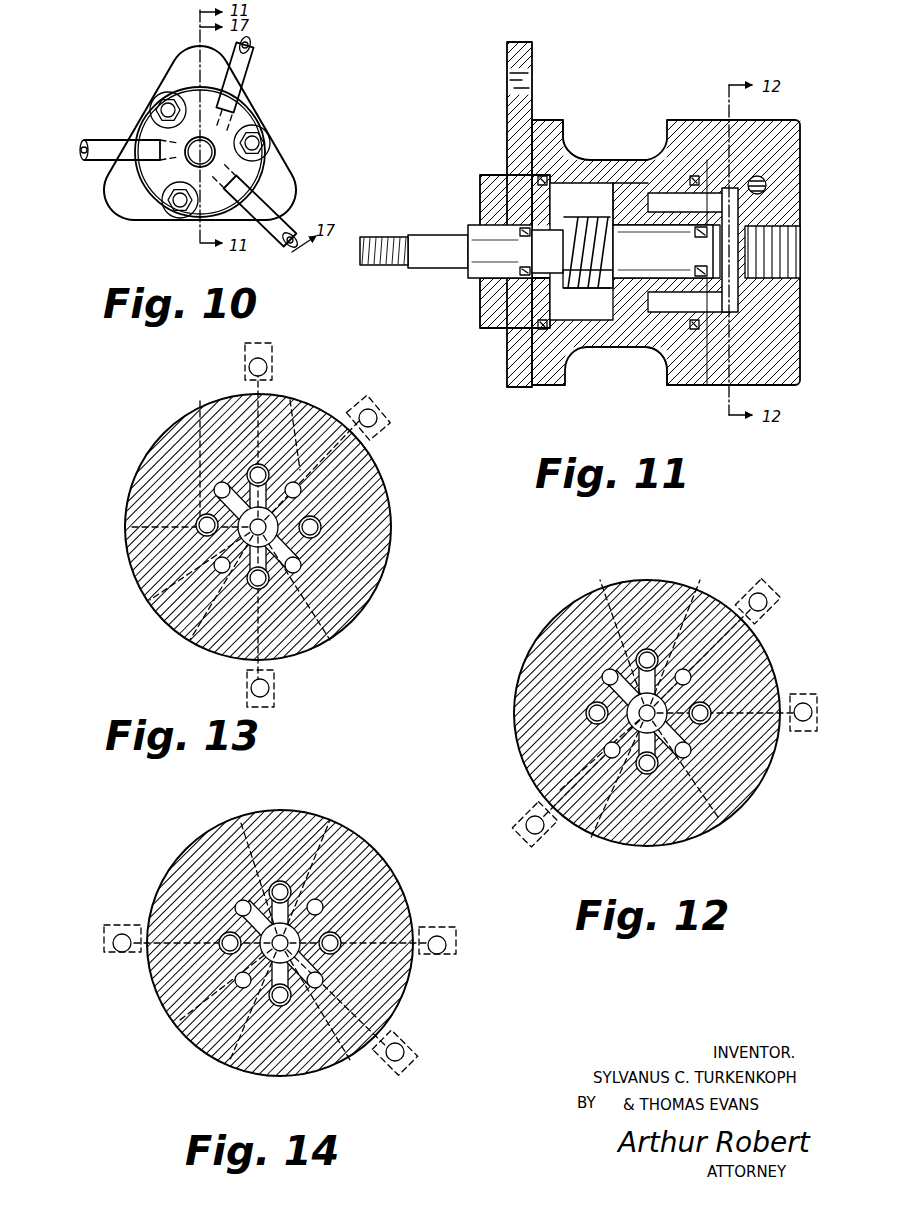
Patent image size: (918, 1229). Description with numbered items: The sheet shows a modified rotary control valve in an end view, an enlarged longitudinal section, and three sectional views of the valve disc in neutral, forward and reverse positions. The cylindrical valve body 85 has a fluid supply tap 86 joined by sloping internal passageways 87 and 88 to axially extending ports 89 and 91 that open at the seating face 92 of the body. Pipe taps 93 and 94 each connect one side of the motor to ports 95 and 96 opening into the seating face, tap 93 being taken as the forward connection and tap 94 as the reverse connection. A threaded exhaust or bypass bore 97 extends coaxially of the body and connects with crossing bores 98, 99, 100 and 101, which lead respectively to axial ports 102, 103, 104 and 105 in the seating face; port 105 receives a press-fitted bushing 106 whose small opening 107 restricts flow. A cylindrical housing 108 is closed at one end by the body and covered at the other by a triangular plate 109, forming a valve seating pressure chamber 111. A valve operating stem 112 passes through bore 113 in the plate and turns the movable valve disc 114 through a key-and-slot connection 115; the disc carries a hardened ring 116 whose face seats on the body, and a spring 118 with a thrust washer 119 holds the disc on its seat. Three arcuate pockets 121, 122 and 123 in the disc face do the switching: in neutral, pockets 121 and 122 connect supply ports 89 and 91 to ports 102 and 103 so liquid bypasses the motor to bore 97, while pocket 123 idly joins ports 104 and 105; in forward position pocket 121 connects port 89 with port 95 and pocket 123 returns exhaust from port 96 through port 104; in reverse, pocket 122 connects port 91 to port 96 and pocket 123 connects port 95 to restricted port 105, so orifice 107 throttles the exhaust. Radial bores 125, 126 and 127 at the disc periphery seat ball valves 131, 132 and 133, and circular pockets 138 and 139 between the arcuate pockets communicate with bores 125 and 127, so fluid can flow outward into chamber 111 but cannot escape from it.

In FIG. 10, the cylindrical valve body 85 is at (248, 100).
In FIG. 11, the cylindrical valve body 85 is at (722, 120).
In FIG. 13, the cylindrical valve body 85 is at (345, 615).
In FIG. 12, the cylindrical valve body 85 is at (735, 820).
In FIG. 14, the cylindrical valve body 85 is at (330, 1065).
In FIG. 10, the fluid supply tap 86 is at (216, 102).
In FIG. 13, the fluid supply tap 86 is at (203, 466).
In FIG. 12, the fluid supply tap 86 is at (590, 650).
In FIG. 14, the fluid supply tap 86 is at (210, 855).
In FIG. 13, the sloping internal passageway 87 is at (215, 478).
In FIG. 12, the sloping internal passageway 87 is at (600, 660).
In FIG. 14, the sloping internal passageway 87 is at (220, 880).
In FIG. 11, the sloping internal passageway 88 is at (766, 186).
In FIG. 13, the sloping internal passageway 88 is at (290, 400).
In FIG. 12, the sloping internal passageway 88 is at (640, 590).
In FIG. 14, the sloping internal passageway 88 is at (290, 820).
In FIG. 13, the axially extending port 89 is at (196, 525).
In FIG. 12, the axially extending port 89 is at (586, 713).
In FIG. 14, the axially extending port 89 is at (222, 936).
In FIG. 13, the axially extending port 91 is at (302, 489).
In FIG. 12, the axially extending port 91 is at (692, 676).
In FIG. 14, the axially extending port 91 is at (324, 906).
In FIG. 11, the seating face 92 is at (632, 192).
In FIG. 10, the pipe tap 93 is at (262, 176).
In FIG. 13, the pipe tap 93 is at (190, 622).
In FIG. 12, the pipe tap 93 is at (580, 800).
In FIG. 14, the pipe tap 93 is at (200, 1000).
In FIG. 10, the pipe tap 94 is at (140, 180).
In FIG. 13, the pipe tap 94 is at (330, 545).
In FIG. 12, the pipe tap 94 is at (725, 735).
In FIG. 14, the pipe tap 94 is at (342, 948).
In FIG. 13, the port 95 is at (215, 650).
In FIG. 12, the port 95 is at (603, 750).
In FIG. 14, the port 95 is at (234, 980).
In FIG. 13, the port 96 is at (322, 527).
In FIG. 12, the port 96 is at (710, 722).
In FIG. 14, the port 96 is at (325, 975).
In FIG. 10, the threaded exhaust or bypass bore 97 is at (190, 162).
In FIG. 11, the threaded exhaust or bypass bore 97 is at (800, 250).
In FIG. 13, the threaded exhaust or bypass bore 97 is at (232, 652).
In FIG. 12, the threaded exhaust or bypass bore 97 is at (605, 835).
In FIG. 14, the threaded exhaust or bypass bore 97 is at (380, 1010).
In FIG. 13, the crossing bore 98 is at (205, 505).
In FIG. 11, the crossing bore 99 is at (738, 250).
In FIG. 13, the crossing bore 99 is at (318, 520).
In FIG. 12, the crossing bore 99 is at (710, 705).
In FIG. 13, the crossing bore 100 is at (300, 562).
In FIG. 11, the crossing bore 101 is at (740, 302).
In FIG. 13, the crossing bore 101 is at (272, 566).
In FIG. 14, the crossing bore 101 is at (295, 1060).
In FIG. 13, the axial port 102 is at (214, 490).
In FIG. 12, the axial port 102 is at (602, 677).
In FIG. 14, the axial port 102 is at (235, 906).
In FIG. 11, the axial port 103 is at (662, 195).
In FIG. 13, the axial port 103 is at (268, 470).
In FIG. 12, the axial port 103 is at (660, 600).
In FIG. 14, the axial port 103 is at (300, 885).
In FIG. 13, the axial port 104 is at (322, 598).
In FIG. 12, the axial port 104 is at (692, 756).
In FIG. 11, the axial port 105 is at (702, 386).
In FIG. 13, the axial port 105 is at (262, 588).
In FIG. 12, the axial port 105 is at (650, 775).
In FIG. 14, the axial port 105 is at (282, 1005).
In FIG. 11, the bushing 106 is at (668, 386).
In FIG. 13, the small opening 107 is at (245, 662).
In FIG. 14, the small opening 107 is at (260, 1070).
In FIG. 11, the cylindrical housing 108 is at (575, 145).
In FIG. 10, the triangular plate 109 is at (170, 73).
In FIG. 11, the triangular plate 109 is at (505, 120).
In FIG. 11, the valve seating pressure chamber 111 is at (603, 172).
In FIG. 11, the valve operating stem 112 is at (470, 258).
In FIG. 11, the bore 113 is at (500, 270).
In FIG. 11, the movable valve disc 114 is at (625, 182).
In FIG. 11, the key-and-slot connection 115 is at (664, 238).
In FIG. 11, the hardened ring 116 is at (625, 350).
In FIG. 11, the spring 118 is at (590, 285).
In FIG. 11, the thrust washer 119 is at (566, 222).
In FIG. 13, the arcuate pocket 121 is at (210, 556).
In FIG. 12, the arcuate pocket 121 is at (600, 692).
In FIG. 14, the arcuate pocket 121 is at (235, 845).
In FIG. 13, the arcuate pocket 122 is at (240, 405).
In FIG. 12, the arcuate pocket 122 is at (690, 600).
In FIG. 14, the arcuate pocket 122 is at (350, 925).
In FIG. 13, the arcuate pocket 123 is at (332, 585).
In FIG. 12, the arcuate pocket 123 is at (700, 830).
In FIG. 14, the arcuate pocket 123 is at (245, 1060).
In FIG. 12, the radial bore 125 is at (545, 815).
In FIG. 12, the radial bore 126 is at (770, 617).
In FIG. 12, the radial bore 127 is at (795, 727).
In FIG. 13, the ball valve 131 is at (272, 695).
In FIG. 12, the ball valve 131 is at (524, 825).
In FIG. 14, the ball valve 131 is at (112, 943).
In FIG. 13, the ball valve 132 is at (270, 363).
In FIG. 12, the ball valve 132 is at (770, 590).
In FIG. 14, the ball valve 132 is at (450, 950).
In FIG. 13, the ball valve 133 is at (380, 418).
In FIG. 12, the ball valve 133 is at (813, 713).
In FIG. 14, the ball valve 133 is at (410, 1060).
In FIG. 12, the circular pocket 138 is at (600, 735).
In FIG. 14, the circular pocket 138 is at (225, 925).
In FIG. 12, the circular pocket 139 is at (730, 712).
In FIG. 14, the circular pocket 139 is at (360, 1060).